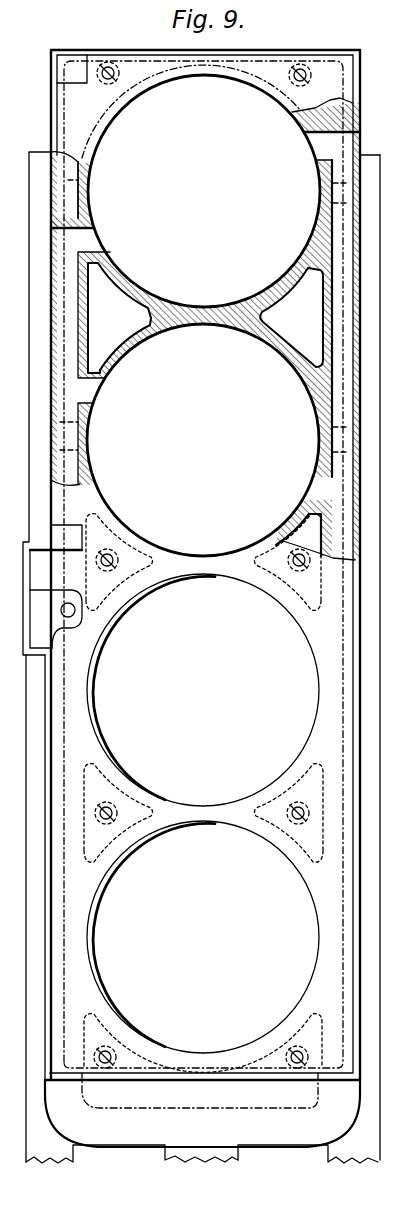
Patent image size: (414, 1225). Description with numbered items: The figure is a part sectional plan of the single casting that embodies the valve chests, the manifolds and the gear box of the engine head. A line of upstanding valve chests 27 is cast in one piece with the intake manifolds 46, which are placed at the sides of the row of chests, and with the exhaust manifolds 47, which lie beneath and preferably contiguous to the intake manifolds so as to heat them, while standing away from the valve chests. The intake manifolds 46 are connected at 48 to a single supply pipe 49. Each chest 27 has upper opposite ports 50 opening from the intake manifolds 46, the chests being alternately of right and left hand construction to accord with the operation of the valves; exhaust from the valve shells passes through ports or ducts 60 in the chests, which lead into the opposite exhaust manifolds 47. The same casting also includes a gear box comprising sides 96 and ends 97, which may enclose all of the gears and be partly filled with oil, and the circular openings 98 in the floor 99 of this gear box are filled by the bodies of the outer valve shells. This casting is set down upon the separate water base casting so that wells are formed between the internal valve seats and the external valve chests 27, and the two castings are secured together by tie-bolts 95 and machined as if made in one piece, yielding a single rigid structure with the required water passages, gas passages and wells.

The valve chests 27 is at (122, 292).
The intake manifolds 46 is at (52, 335).
The exhaust manifolds 47 is at (357, 492).
The connection 48 is at (318, 1150).
The supply pipe 49 is at (164, 1158).
The upper opposite ports 50 is at (205, 329).
The ports or ducts 60 is at (90, 173).
The tie-bolts 95 is at (311, 79).
The sides 96 is at (45, 979).
The ends 97 is at (342, 52).
The circular openings 98 is at (318, 707).
The floor 99 is at (203, 584).